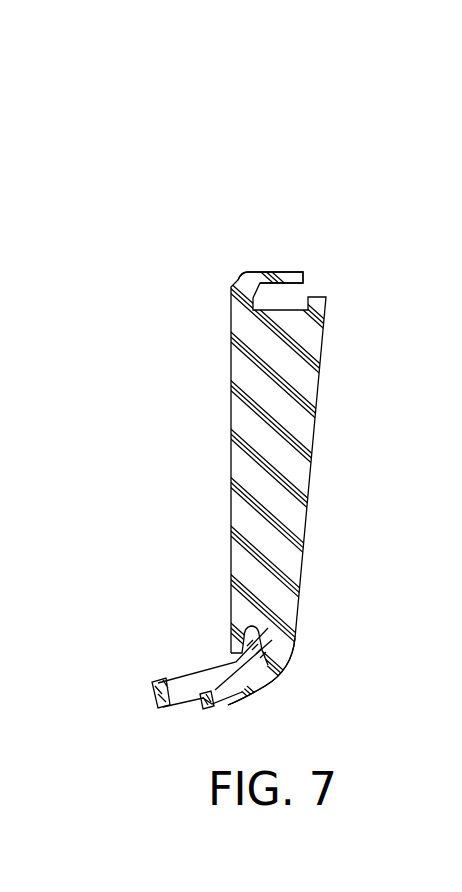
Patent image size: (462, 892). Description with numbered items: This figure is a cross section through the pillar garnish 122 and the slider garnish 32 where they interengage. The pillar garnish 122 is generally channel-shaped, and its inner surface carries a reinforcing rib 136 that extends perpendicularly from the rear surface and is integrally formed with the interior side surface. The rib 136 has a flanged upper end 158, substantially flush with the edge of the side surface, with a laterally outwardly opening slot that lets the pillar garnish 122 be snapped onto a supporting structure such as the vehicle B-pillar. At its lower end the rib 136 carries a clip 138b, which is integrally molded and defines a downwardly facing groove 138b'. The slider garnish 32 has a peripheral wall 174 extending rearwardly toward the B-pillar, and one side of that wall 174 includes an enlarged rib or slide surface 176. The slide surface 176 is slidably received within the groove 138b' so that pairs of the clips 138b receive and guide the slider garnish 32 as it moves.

The flanged upper end 158 is at (277, 247).
The pillar garnish 122 is at (310, 475).
The reinforcing rib 136 is at (257, 427).
The downwardly facing groove 138b' is at (180, 585).
The clip 138b is at (142, 660).
The rib or slide surface 176 is at (268, 632).
The peripheral wall 174 is at (278, 670).
The slider garnish 32 is at (160, 701).